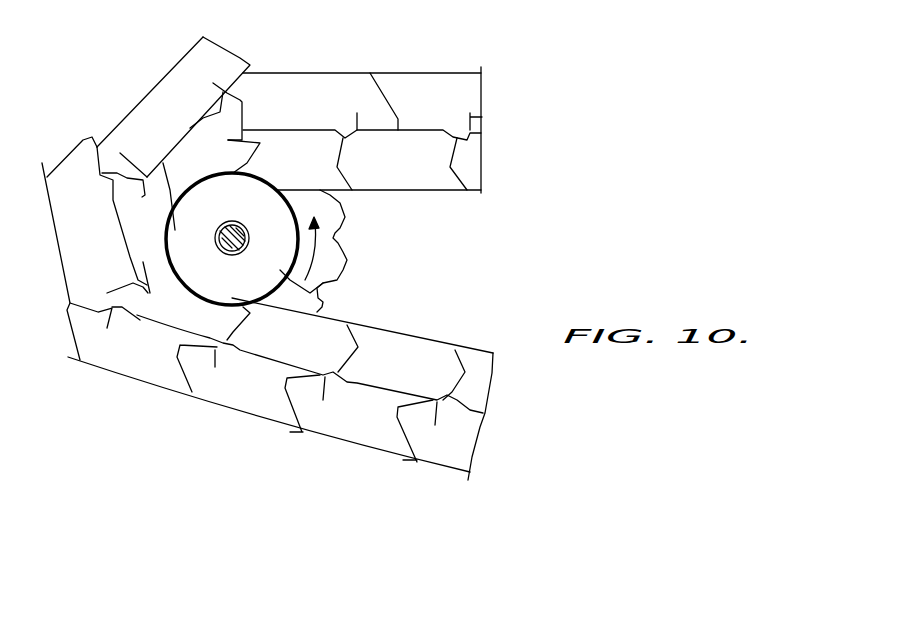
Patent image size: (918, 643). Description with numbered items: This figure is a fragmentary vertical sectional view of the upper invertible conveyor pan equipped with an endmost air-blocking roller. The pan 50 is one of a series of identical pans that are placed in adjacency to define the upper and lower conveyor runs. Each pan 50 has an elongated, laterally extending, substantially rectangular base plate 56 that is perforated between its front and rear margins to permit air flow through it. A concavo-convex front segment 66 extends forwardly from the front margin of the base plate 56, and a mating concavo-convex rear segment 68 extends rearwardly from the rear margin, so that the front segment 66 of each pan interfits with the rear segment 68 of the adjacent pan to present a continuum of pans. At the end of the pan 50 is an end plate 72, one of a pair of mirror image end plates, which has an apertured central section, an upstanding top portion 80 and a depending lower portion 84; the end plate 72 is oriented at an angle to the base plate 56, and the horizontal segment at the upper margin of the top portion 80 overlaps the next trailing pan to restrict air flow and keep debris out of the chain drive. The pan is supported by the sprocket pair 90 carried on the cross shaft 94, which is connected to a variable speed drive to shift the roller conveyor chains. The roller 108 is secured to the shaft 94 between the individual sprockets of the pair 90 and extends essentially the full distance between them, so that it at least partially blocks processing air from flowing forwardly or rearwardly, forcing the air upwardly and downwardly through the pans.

The pan 50 is at (492, 433).
The base plate 56 is at (430, 128).
The front segment 66 is at (357, 140).
The rear segment 68 is at (482, 117).
The end plate 72 is at (490, 92).
The top portion 80 is at (447, 452).
The lower portion 84 is at (478, 376).
The front sprocket pair 90 is at (350, 229).
The cross shaft 94 is at (241, 232).
The roller 108 is at (318, 299).